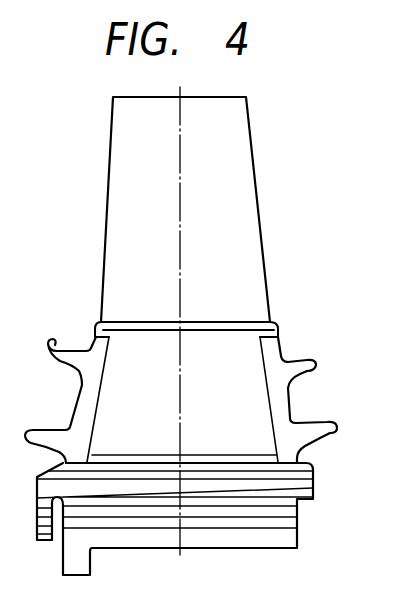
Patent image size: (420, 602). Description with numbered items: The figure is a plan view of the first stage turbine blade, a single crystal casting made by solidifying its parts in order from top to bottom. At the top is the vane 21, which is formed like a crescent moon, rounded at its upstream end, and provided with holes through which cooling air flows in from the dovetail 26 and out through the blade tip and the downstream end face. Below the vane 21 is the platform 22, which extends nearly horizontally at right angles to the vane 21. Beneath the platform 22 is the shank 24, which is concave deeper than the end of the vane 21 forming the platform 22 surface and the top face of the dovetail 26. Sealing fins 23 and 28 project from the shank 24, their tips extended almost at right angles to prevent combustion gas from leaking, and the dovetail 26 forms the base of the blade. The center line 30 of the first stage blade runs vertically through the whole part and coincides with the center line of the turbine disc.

The vane 21 is at (253, 158).
The platform 22 is at (229, 323).
The sealing fin 23 is at (288, 362).
The shank 24 is at (248, 396).
The dovetail 26 is at (298, 518).
The sealing fin 28 is at (321, 440).
The center line 30 is at (180, 236).